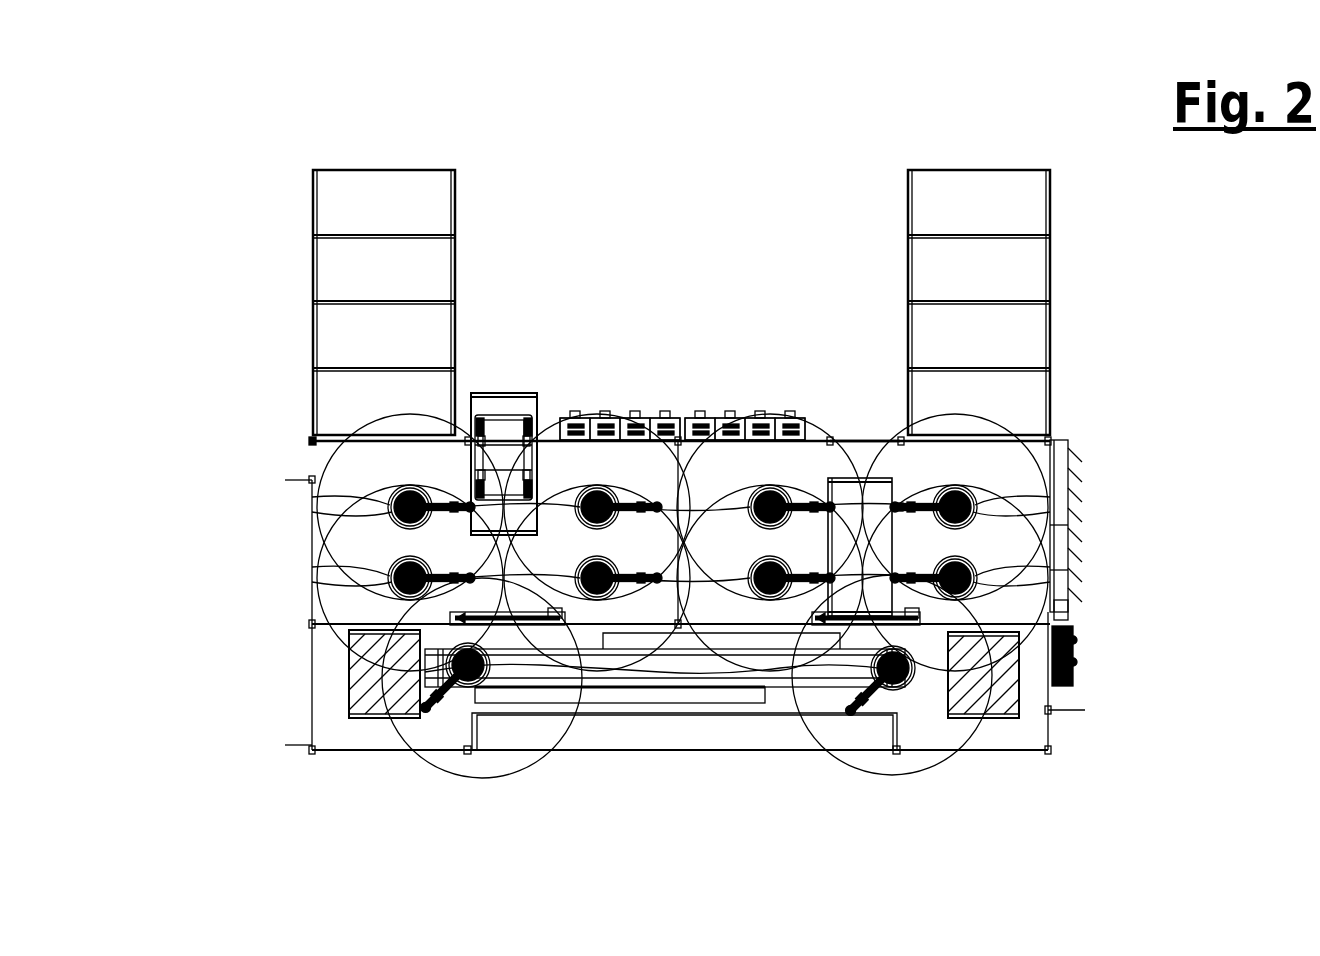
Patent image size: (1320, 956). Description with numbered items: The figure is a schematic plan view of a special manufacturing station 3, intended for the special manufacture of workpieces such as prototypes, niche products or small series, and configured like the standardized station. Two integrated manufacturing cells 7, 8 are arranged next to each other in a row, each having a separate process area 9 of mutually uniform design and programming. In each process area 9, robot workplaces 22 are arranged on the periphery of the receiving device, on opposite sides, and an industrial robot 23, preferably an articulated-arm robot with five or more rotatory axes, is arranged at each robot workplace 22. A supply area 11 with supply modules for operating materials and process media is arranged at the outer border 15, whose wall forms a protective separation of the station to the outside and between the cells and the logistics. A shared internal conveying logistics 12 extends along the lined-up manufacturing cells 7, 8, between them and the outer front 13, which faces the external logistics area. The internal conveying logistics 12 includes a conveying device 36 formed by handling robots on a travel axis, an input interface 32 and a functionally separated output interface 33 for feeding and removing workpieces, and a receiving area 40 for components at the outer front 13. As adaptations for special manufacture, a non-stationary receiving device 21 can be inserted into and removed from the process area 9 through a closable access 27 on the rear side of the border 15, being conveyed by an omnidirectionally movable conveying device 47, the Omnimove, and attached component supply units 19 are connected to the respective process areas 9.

The manufacturing station 3 is at (255, 397).
The manufacturing cell 7 is at (631, 475).
The manufacturing cell 8 is at (1037, 494).
The process area 9 is at (730, 475).
The supply area 11 is at (599, 408).
The internal conveying logistics 12 is at (328, 707).
The outer front 13 is at (686, 743).
The border 15 is at (305, 560).
The component supply unit 19 is at (347, 192).
The non-stationary receiving device 21 is at (508, 393).
The robot workplace 22 is at (962, 491).
The industrial robot 23 is at (977, 503).
The access 27 is at (876, 435).
The input interface 32 is at (368, 690).
The output interface 33 is at (1030, 697).
The conveying device 36 is at (524, 680).
The receiving area 40 is at (780, 725).
The omnidirectionally movable conveying device 47 is at (497, 415).